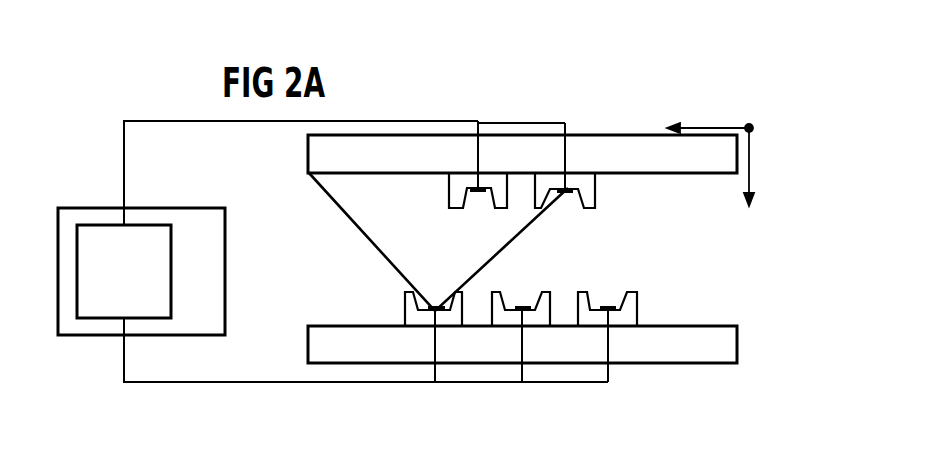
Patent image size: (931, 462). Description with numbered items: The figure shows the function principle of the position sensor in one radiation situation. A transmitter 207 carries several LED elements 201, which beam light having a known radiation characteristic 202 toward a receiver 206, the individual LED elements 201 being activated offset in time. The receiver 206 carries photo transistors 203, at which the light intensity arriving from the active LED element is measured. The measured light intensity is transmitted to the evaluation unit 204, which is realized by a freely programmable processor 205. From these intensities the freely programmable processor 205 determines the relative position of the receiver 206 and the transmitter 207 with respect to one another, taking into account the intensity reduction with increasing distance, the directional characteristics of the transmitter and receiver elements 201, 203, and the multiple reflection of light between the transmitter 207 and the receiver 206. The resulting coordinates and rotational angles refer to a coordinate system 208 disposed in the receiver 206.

The LED elements 201 is at (500, 208).
The radiation characteristic 202 is at (356, 222).
The photo transistors 203 is at (637, 292).
The evaluation unit 204 is at (85, 235).
The freely programmable processor 205 is at (190, 235).
The receiver 206 is at (322, 153).
The transmitter 207 is at (322, 345).
The coordinate system 208 is at (752, 162).